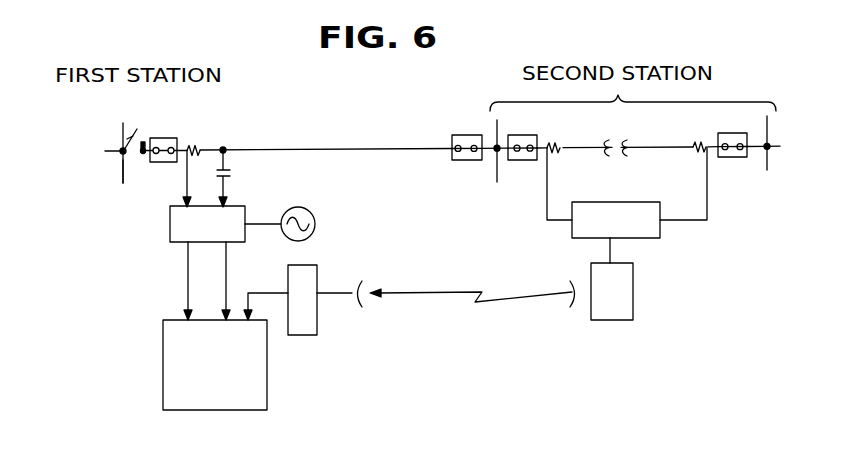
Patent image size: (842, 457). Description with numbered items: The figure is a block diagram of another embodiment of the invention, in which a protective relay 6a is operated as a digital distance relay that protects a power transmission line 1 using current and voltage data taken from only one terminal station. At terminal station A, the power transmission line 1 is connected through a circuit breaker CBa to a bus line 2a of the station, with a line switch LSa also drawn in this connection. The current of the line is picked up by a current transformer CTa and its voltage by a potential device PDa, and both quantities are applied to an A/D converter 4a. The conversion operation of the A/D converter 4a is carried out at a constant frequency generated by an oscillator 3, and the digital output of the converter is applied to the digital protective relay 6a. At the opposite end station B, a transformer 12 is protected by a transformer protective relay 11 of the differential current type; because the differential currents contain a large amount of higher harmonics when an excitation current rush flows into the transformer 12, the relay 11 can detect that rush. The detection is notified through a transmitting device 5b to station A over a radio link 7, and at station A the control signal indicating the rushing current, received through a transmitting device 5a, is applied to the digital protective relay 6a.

The power transmission line 1 is at (341, 148).
The line switch LSa is at (137, 130).
The bus line 2a is at (123, 170).
The circuit breaker CBa is at (153, 123).
The current transformer CTa is at (215, 135).
The potential device PDa is at (249, 177).
The A/D converter 4a is at (170, 232).
The oscillator 3 is at (316, 220).
The digital protective relay 6a is at (163, 365).
The transmitting device 5a is at (317, 265).
The radio link 7 is at (460, 307).
The transformer 12 is at (617, 155).
The transformer protective relay 11 is at (661, 238).
The transmitting device 5b is at (633, 293).